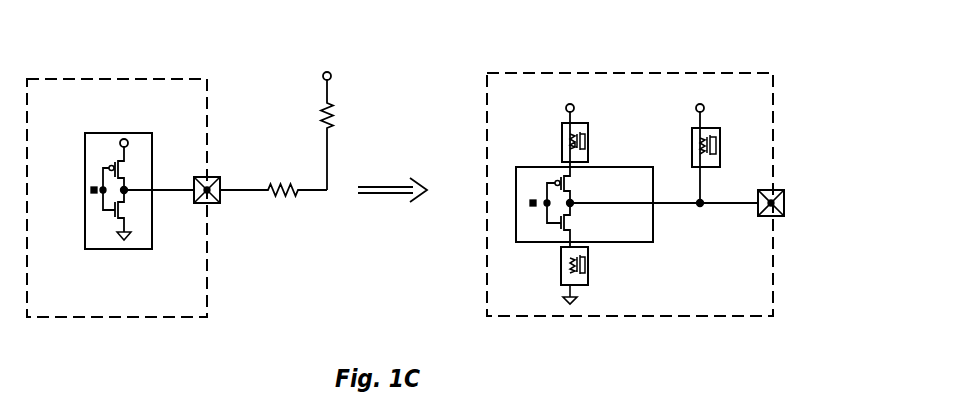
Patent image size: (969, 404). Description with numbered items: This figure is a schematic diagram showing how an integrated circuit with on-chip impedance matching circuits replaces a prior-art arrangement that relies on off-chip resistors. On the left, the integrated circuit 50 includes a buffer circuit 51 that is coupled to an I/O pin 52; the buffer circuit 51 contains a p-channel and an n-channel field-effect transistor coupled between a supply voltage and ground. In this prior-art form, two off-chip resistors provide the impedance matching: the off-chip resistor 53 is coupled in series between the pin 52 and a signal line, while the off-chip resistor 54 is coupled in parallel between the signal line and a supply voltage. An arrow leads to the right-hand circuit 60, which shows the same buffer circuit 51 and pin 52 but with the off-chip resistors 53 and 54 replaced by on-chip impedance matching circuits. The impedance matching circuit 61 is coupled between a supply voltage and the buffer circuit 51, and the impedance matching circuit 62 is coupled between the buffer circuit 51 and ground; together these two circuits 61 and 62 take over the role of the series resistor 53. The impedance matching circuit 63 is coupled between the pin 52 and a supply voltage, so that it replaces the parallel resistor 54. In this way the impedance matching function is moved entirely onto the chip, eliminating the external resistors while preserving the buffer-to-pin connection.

The integrated circuit 50 is at (93, 79).
The buffer circuit 51 is at (118, 132).
The I/O pin 52 is at (217, 177).
The off-chip resistor 53 is at (280, 197).
The off-chip resistor 54 is at (332, 113).
The output circuit with integrated resistive transistors 60 is at (638, 73).
The on-chip impedance matching circuit 61 is at (590, 130).
The on-chip impedance matching circuit 62 is at (590, 268).
The on-chip impedance matching circuit 63 is at (720, 130).